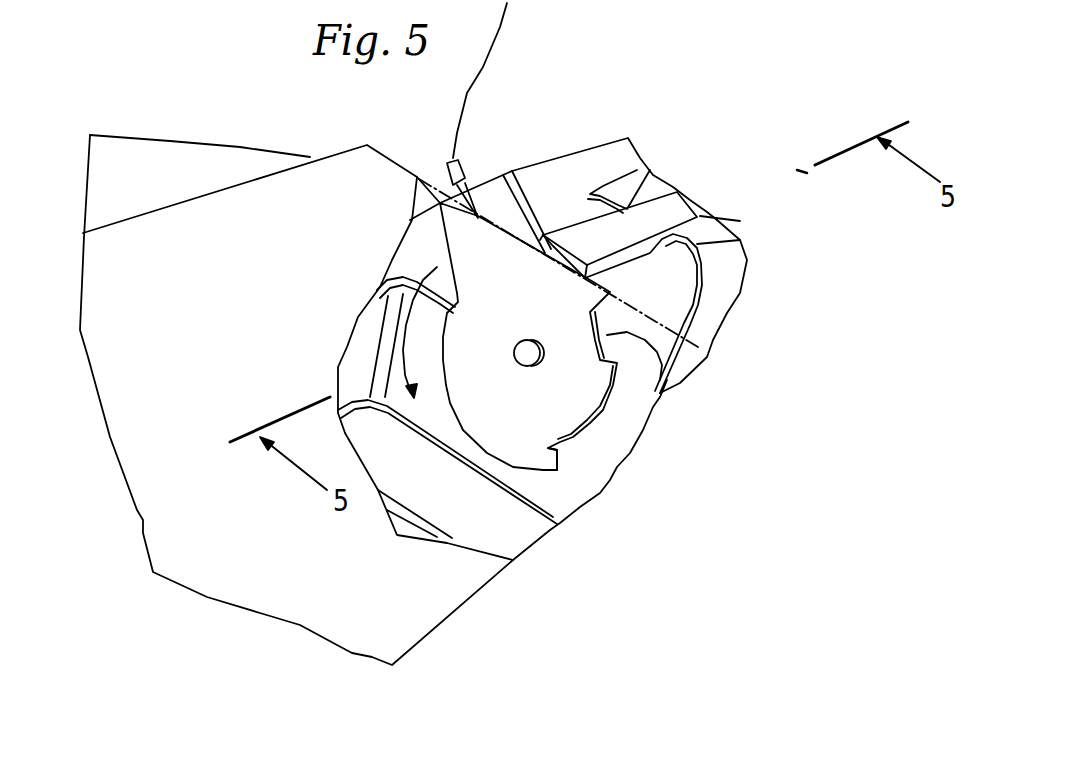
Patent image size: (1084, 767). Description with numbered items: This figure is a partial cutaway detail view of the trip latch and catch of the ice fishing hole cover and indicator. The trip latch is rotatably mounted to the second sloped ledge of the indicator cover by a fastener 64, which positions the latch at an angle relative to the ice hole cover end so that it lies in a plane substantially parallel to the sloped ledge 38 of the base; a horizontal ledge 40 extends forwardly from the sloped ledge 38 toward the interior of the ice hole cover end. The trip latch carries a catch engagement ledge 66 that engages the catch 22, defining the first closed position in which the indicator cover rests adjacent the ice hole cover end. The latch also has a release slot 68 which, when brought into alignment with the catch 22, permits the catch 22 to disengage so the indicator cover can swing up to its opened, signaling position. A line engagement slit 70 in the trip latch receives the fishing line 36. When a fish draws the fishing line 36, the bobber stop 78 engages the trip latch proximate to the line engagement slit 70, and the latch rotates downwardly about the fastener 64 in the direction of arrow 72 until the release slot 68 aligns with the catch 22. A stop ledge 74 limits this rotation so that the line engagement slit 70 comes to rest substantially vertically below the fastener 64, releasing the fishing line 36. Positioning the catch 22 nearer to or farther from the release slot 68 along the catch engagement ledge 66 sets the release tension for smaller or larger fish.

The catch 22 is at (670, 189).
The fishing line 36 is at (436, 110).
The sloped ledge 38 is at (700, 313).
The horizontal ledge 40 is at (373, 429).
The fastener 64 is at (583, 387).
The catch engagement ledge 66 is at (709, 241).
The release slot 68 is at (706, 347).
The line engagement slit 70 is at (636, 167).
The arrow 72 is at (313, 240).
The stop ledge 74 is at (595, 532).
The bobber stop 78 is at (480, 215).